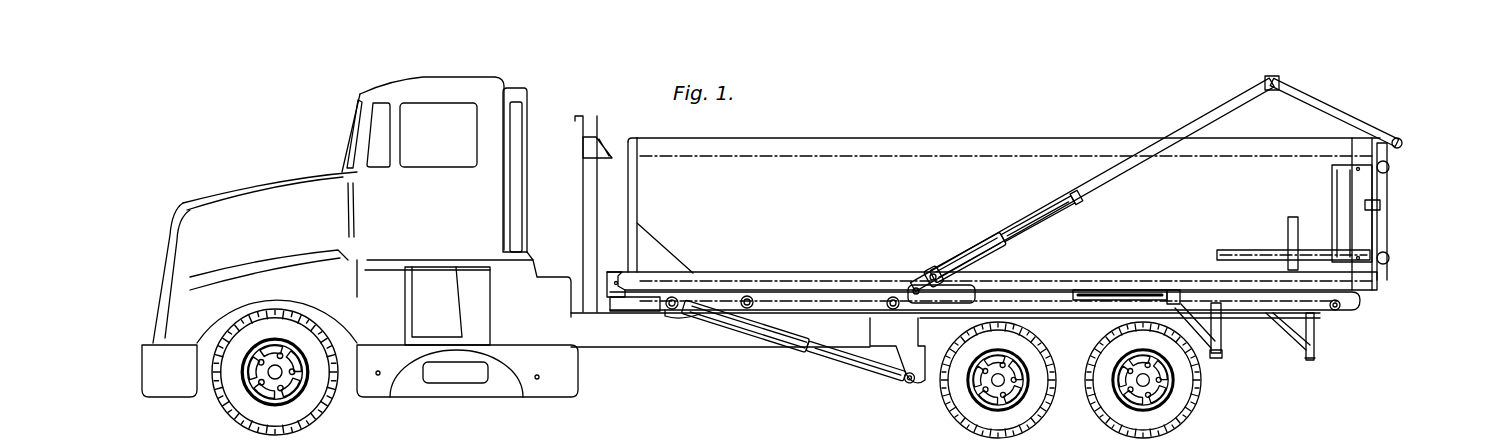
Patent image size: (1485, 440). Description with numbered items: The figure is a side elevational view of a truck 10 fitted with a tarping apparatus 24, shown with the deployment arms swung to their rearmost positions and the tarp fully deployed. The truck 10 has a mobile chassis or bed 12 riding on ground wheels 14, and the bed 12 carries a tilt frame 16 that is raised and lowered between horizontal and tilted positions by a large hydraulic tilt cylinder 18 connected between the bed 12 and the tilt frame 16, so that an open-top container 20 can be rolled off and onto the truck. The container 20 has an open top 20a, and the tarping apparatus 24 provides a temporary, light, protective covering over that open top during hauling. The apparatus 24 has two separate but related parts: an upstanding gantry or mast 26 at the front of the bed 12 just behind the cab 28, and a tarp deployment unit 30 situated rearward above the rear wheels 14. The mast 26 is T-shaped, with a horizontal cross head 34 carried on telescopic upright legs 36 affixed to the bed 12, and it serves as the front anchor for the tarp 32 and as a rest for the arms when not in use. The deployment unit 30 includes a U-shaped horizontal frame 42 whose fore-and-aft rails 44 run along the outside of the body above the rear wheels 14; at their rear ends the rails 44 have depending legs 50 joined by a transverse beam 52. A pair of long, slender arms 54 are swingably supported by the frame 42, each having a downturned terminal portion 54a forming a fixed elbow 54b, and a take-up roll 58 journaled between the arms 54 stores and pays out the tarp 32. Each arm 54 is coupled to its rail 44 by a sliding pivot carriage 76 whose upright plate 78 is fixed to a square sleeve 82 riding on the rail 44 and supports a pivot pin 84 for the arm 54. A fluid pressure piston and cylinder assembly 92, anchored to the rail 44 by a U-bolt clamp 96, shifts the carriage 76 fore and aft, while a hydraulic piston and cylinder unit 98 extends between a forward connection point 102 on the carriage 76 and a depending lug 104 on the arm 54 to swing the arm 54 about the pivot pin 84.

The truck 10 is at (559, 106).
The mobile chassis or bed 12 is at (643, 337).
The ground wheels 14 is at (303, 418).
The tilt frame 16 is at (615, 302).
The hydraulic tilt cylinder 18 is at (777, 333).
The container 20 is at (858, 170).
The open top 20a is at (935, 148).
The tarping apparatus 24 is at (1347, 100).
The gantry or mast 26 is at (600, 122).
The cab 28 is at (483, 210).
The tarp deployment unit 30 is at (1067, 176).
The tarp 32 is at (621, 142).
The cross head 34 is at (590, 151).
The upright legs 36 is at (583, 278).
The frame 42 is at (1236, 346).
The fore-and-aft rails 44 is at (1203, 303).
The depending legs 50 is at (1220, 316).
The transverse beam 52 is at (1215, 355).
The arms 54 is at (1130, 173).
The downturned terminal portion 54a is at (1307, 93).
The elbow 54b is at (1267, 80).
The take-up roll 58 is at (1396, 130).
The sliding pivot carriage 76 is at (900, 290).
The upright plate 78 is at (933, 273).
The sleeve 82 is at (1035, 303).
The pivot pin 84 is at (1003, 280).
The fluid pressure piston and cylinder assembly 92 is at (1100, 293).
The U-bolt clamp 96 is at (1173, 297).
The hydraulic piston and cylinder unit 98 is at (957, 253).
The forward connection point 102 is at (910, 290).
The depending lug 104 is at (1070, 197).